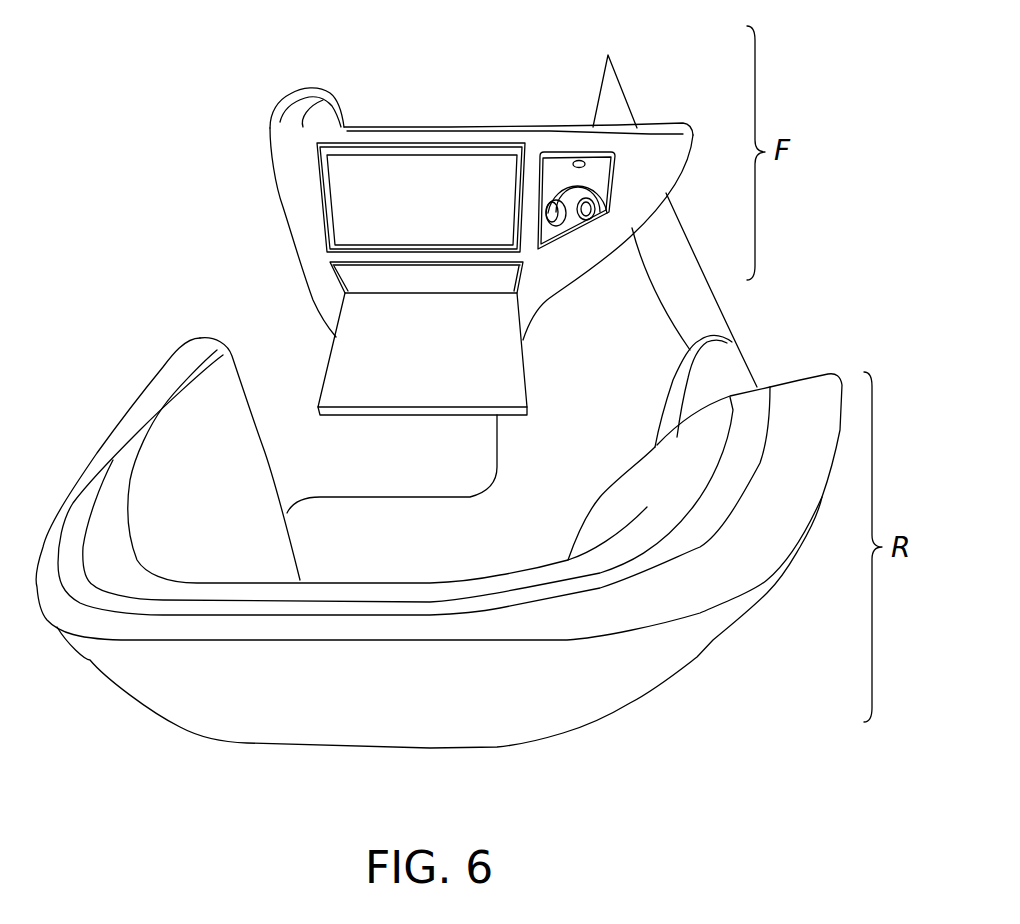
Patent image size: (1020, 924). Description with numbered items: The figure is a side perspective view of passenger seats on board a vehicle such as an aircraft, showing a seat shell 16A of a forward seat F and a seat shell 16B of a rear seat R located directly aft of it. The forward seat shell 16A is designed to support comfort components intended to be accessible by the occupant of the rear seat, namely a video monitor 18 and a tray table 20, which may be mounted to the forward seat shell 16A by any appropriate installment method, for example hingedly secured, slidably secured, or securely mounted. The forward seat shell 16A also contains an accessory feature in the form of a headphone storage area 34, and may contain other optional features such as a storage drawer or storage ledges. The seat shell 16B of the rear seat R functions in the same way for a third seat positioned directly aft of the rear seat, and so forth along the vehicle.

The seat shell 16A is at (277, 138).
The seat shell 16B is at (628, 620).
The video monitor 18 is at (403, 187).
The tray table 20 is at (398, 357).
The headphone storage area 34 is at (560, 160).